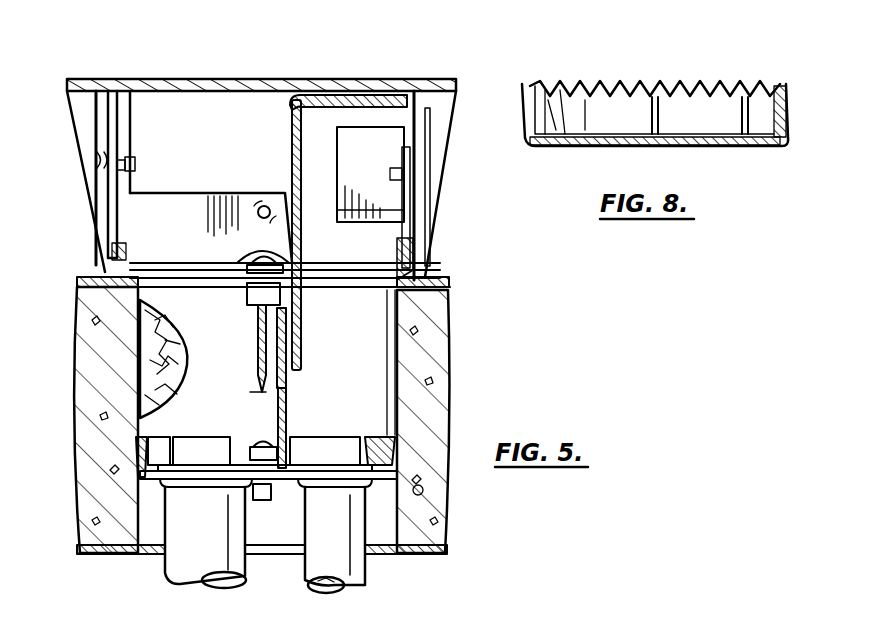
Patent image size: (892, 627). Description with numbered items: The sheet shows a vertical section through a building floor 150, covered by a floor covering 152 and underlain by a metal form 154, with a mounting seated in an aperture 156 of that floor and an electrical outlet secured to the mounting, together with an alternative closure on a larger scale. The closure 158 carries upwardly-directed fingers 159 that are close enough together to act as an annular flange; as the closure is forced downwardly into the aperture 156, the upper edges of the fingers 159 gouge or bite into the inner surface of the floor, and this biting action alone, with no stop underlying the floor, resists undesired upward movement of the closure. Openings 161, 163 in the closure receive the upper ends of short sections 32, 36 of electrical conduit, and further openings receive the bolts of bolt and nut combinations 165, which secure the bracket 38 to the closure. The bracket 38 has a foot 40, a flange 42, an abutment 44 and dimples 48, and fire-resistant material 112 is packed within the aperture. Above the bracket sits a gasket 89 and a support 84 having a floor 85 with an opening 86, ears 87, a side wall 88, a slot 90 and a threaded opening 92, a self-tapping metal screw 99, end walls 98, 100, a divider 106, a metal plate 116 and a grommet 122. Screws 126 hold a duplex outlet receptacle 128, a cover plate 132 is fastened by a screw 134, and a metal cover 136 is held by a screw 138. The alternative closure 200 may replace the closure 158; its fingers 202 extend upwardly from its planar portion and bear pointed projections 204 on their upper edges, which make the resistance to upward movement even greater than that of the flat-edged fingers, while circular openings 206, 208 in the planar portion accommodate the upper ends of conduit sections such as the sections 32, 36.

In FIG. 5, the section of electrical conduit 32 is at (190, 584).
In FIG. 5, the section of electrical conduit 36 is at (334, 585).
In FIG. 5, the bracket 38 is at (297, 401).
In FIG. 5, the foot 40 is at (256, 446).
In FIG. 5, the flange 42 is at (232, 306).
In FIG. 5, the abutment 44 is at (282, 299).
In FIG. 5, the dimples 48 is at (288, 325).
In FIG. 5, the support 84 is at (201, 187).
In FIG. 5, the floor of the support 85 is at (142, 262).
In FIG. 5, the opening in the floor 86 is at (138, 262).
In FIG. 5, the ears 87 is at (238, 262).
In FIG. 5, the side wall of the support 88 is at (332, 200).
In FIG. 5, the gasket 89 is at (415, 275).
In FIG. 5, the slot 90 is at (334, 216).
In FIG. 5, the threaded opening 92 is at (292, 182).
In FIG. 5, the end wall 98 is at (131, 160).
In FIG. 5, the self-tapping metal screw 99 is at (258, 378).
In FIG. 5, the end wall 100 is at (414, 247).
In FIG. 5, the divider 106 is at (290, 124).
In FIG. 5, the fire-resistant material 112 is at (186, 350).
In FIG. 5, the metal plate 116 is at (117, 122).
In FIG. 5, the grommet 122 is at (95, 91).
In FIG. 5, the screws 126 is at (96, 160).
In FIG. 5, the duplex outlet receptacle 128 is at (430, 141).
In FIG. 5, the cover plate 132 is at (418, 117).
In FIG. 5, the screw 134 is at (412, 178).
In FIG. 5, the metal cover 136 is at (328, 79).
In FIG. 5, the screw 138 is at (262, 204).
In FIG. 5, the floor 150 is at (447, 376).
In FIG. 5, the floor covering 152 is at (80, 278).
In FIG. 5, the metal form 154 is at (422, 554).
In FIG. 5, the aperture 156 is at (395, 349).
In FIG. 5, the closure 158 is at (424, 489).
In FIG. 5, the fingers 159 is at (163, 440).
In FIG. 5, the opening 161 is at (172, 487).
In FIG. 5, the opening 163 is at (310, 487).
In FIG. 5, the bolt and nut combinations 165 is at (268, 500).
In FIG. 8, the closure 200 is at (764, 144).
In FIG. 8, the fingers 202 is at (630, 88).
In FIG. 8, the pointed projections 204 is at (760, 90).
In FIG. 8, the circular opening 206 is at (570, 147).
In FIG. 8, the circular opening 208 is at (726, 148).